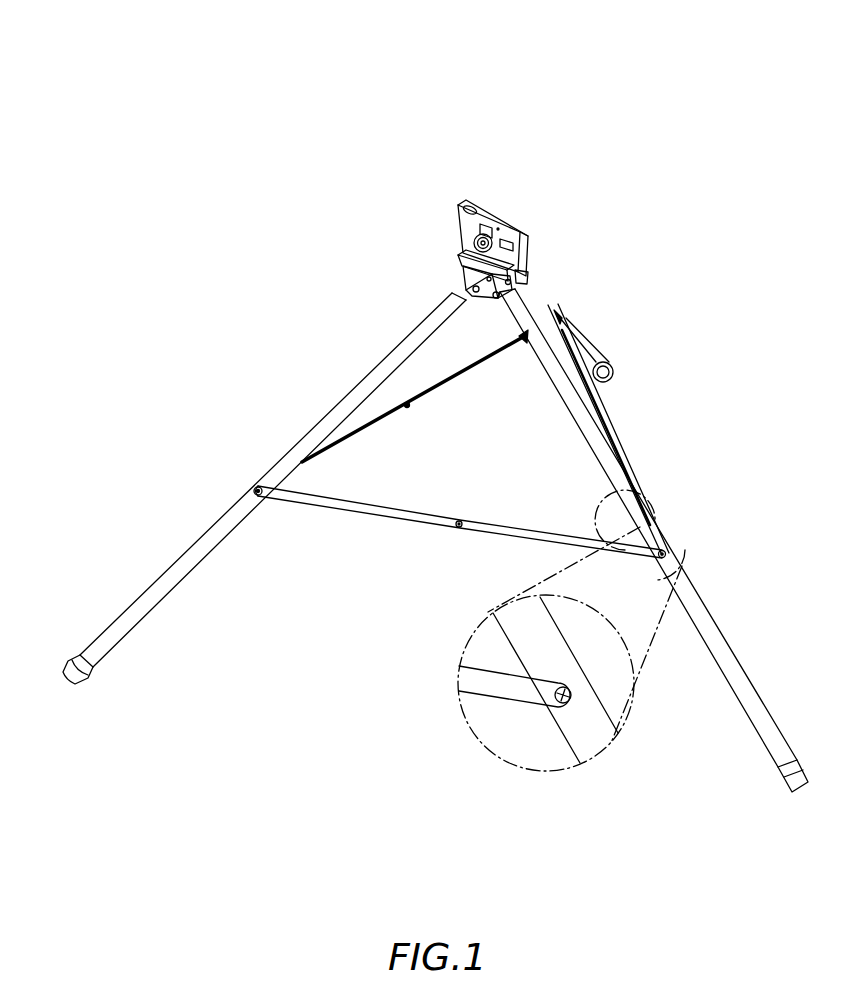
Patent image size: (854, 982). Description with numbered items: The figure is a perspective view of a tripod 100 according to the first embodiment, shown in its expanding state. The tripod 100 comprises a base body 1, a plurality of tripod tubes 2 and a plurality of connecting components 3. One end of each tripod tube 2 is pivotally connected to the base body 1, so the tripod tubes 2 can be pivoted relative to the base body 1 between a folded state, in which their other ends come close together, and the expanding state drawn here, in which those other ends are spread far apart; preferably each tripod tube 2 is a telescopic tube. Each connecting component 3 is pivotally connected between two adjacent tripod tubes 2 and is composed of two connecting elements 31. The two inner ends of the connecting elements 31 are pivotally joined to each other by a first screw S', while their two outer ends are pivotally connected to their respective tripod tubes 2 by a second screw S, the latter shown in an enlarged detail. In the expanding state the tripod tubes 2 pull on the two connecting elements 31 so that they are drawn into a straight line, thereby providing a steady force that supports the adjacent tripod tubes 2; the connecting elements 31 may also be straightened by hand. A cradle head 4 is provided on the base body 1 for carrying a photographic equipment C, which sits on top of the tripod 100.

The tripod 100 is at (702, 105).
The base body 1 is at (522, 278).
The tripod tubes 2 is at (301, 447).
The connecting components 3 is at (478, 615).
The connecting elements 31 is at (384, 510).
The cradle head 4 is at (458, 257).
The photographic equipment C is at (494, 217).
The second screw S is at (571, 630).
The first screw S' is at (478, 490).